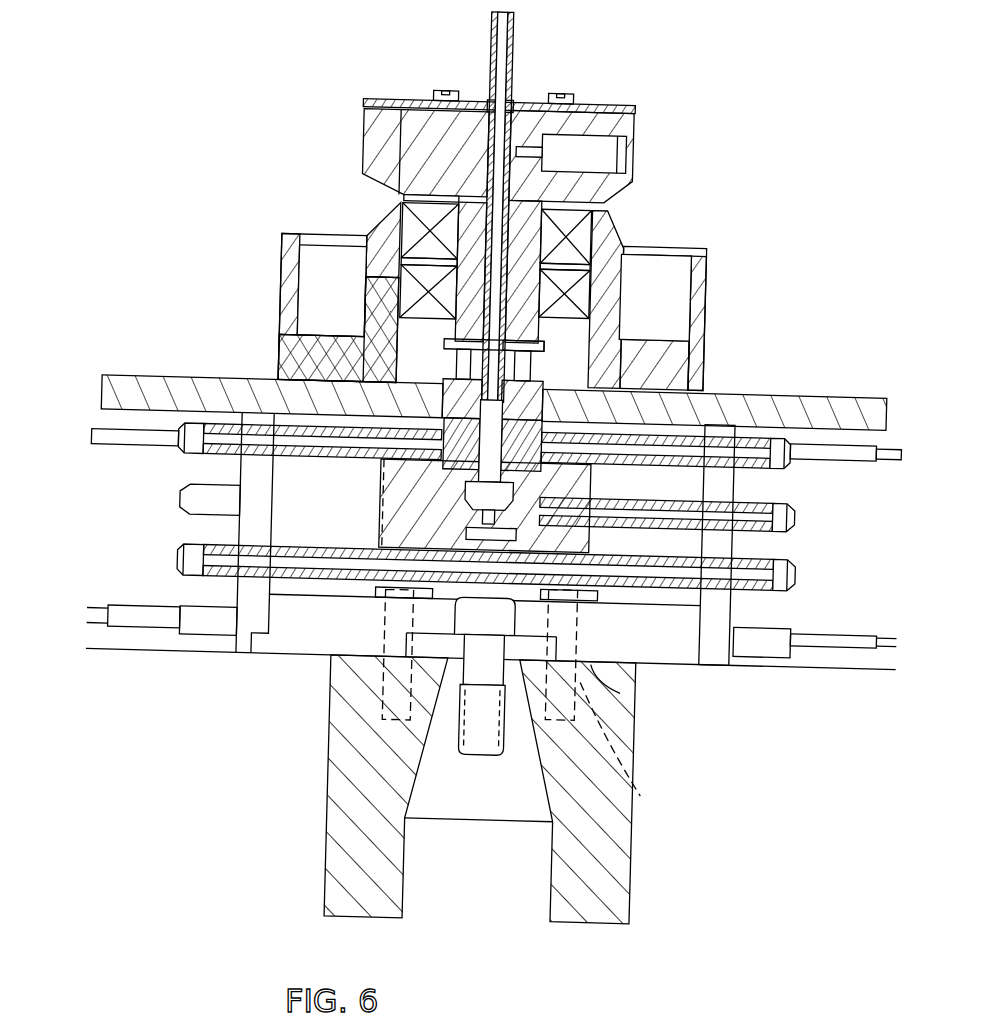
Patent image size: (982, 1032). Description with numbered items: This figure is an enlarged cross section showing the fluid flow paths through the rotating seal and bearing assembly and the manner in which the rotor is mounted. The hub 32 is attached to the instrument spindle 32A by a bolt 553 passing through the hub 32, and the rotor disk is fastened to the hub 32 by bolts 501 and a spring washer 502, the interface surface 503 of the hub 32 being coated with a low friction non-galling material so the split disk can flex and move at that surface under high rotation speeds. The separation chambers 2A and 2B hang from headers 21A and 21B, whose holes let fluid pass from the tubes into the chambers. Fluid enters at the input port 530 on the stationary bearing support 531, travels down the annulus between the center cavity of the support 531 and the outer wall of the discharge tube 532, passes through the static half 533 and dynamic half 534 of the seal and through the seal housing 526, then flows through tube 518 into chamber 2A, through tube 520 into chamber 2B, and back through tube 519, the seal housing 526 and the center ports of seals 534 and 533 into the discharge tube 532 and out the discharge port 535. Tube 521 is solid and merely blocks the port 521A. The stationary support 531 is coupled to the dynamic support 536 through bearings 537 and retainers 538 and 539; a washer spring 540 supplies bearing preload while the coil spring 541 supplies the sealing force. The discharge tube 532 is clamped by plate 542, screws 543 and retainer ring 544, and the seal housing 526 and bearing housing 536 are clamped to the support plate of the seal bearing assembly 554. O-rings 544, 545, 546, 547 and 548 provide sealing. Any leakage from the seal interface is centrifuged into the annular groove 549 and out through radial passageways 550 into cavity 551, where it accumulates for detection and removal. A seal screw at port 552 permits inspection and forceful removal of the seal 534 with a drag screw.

The discharge port 535 is at (490, 26).
The discharge tube 532 is at (507, 76).
The retainer ring 544 is at (485, 104).
The plate 542 is at (416, 102).
The screws 543 is at (570, 95).
The washer spring 540 is at (438, 200).
The stationary bearing support 531 is at (356, 177).
The input port 530 is at (598, 149).
The retainer 538 is at (398, 257).
The dynamic support 536 is at (278, 252).
The bearings 537 is at (598, 298).
The cavity 551 is at (305, 299).
The radial passageways 550 is at (361, 314).
The retainer 539 is at (440, 318).
The coil spring 541 is at (594, 338).
The annular groove 549 is at (297, 350).
The static half of the seal 533 is at (445, 344).
The dynamic half of the seal 534 is at (453, 378).
The O-ring 546 is at (596, 349).
The O-ring 545 is at (594, 366).
The O-ring 547 is at (583, 396).
The tube 518 is at (188, 447).
The seal bearing assembly 554 is at (846, 445).
The port 521A is at (528, 462).
The O-ring 548 is at (453, 471).
The tube 521 is at (778, 463).
The seal housing 526 is at (380, 523).
The tube 519 is at (768, 514).
The tube 520 is at (181, 580).
The seal screw port 552 is at (483, 548).
The spring washer 502 is at (565, 624).
The separation chamber 2A is at (150, 662).
The header 21A is at (300, 662).
The interface surface 503 is at (627, 672).
The header 21B is at (690, 664).
The separation chamber 2B is at (770, 662).
The bolt 553 is at (510, 745).
The bolts 501 is at (650, 792).
The hub 32 is at (338, 863).
The instrument spindle 32A is at (500, 894).